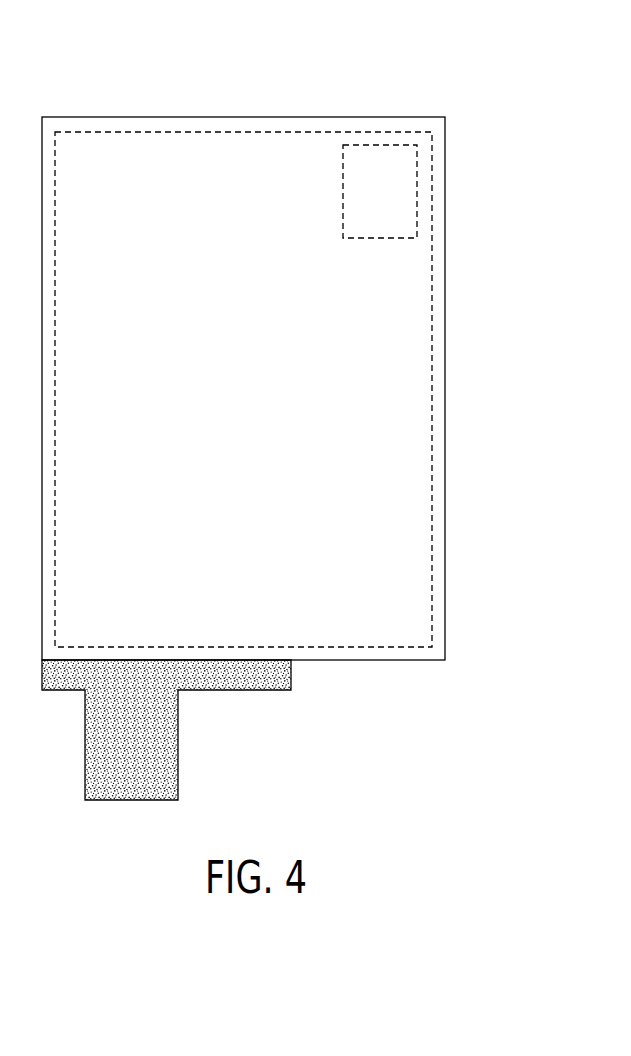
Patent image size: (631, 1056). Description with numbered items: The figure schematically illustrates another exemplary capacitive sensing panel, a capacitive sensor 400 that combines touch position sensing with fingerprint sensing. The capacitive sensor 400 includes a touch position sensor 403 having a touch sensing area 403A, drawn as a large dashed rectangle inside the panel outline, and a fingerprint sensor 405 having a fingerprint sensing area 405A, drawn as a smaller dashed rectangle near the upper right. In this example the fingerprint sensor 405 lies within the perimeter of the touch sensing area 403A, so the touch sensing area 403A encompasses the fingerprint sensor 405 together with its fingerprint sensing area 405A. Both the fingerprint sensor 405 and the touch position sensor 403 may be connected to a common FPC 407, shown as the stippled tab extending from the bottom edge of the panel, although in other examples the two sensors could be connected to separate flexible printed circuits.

The capacitive sensor 400 is at (70, 62).
The touch position sensor 403 is at (433, 488).
The touch sensing area 403A is at (403, 418).
The fingerprint sensor 405 is at (418, 226).
The fingerprint sensing area 405A is at (408, 191).
The common FPC 407 is at (88, 766).